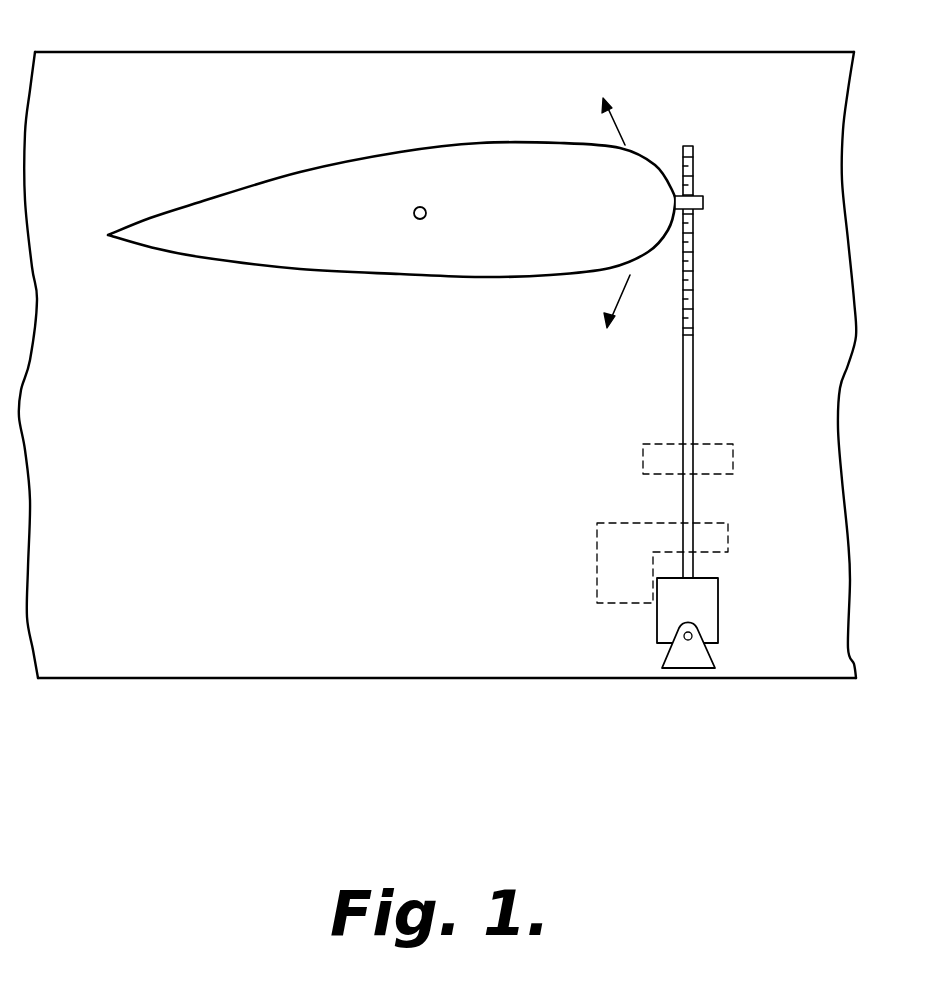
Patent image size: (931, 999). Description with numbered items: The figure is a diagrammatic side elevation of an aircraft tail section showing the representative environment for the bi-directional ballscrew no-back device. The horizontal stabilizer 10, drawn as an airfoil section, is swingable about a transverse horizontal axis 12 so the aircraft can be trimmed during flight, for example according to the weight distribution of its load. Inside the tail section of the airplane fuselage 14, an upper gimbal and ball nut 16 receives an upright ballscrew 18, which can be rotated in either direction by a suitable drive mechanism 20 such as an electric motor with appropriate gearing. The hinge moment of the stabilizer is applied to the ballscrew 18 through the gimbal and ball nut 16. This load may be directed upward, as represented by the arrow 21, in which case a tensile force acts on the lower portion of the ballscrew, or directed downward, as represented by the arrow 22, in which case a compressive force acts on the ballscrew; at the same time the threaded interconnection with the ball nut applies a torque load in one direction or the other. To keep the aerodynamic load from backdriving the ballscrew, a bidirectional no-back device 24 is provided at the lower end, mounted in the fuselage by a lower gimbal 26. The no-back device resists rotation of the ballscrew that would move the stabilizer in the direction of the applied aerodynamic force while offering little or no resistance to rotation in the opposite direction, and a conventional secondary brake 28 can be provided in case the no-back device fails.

The horizontal stabilizer 10 is at (476, 143).
The transverse horizontal axis 12 is at (416, 221).
The airplane fuselage 14 is at (743, 52).
The upper gimbal and ball nut 16 is at (703, 203).
The ballscrew 18 is at (693, 393).
The drive mechanism 20 is at (617, 523).
The arrow 21 is at (619, 129).
The arrow 22 is at (620, 298).
The bidirectional no-back device 24 is at (718, 595).
The lower gimbal 26 is at (698, 657).
The secondary brake 28 is at (733, 454).